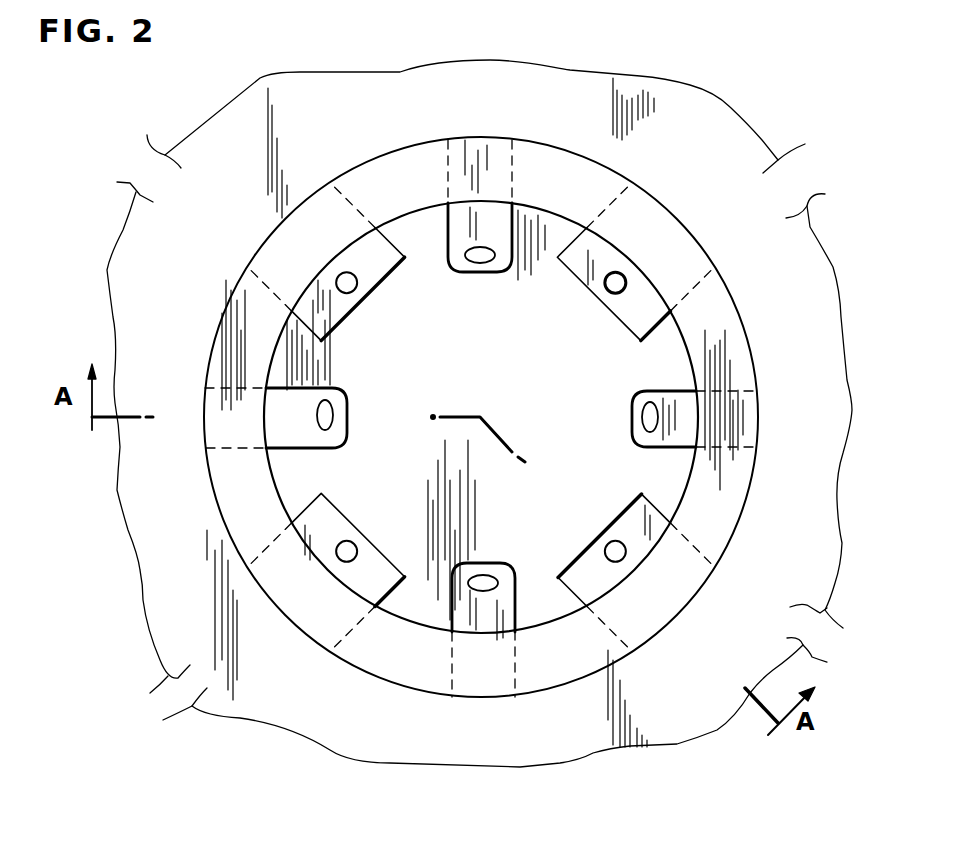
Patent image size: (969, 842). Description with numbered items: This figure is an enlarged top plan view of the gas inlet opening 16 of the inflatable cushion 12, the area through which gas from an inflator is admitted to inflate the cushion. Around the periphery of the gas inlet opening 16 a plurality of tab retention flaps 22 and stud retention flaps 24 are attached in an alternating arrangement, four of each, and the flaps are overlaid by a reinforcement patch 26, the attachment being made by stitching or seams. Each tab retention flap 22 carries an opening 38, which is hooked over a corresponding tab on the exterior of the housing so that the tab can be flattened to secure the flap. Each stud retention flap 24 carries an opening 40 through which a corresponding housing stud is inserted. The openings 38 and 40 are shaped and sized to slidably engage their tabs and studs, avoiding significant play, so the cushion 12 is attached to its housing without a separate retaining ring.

The cushion 12 is at (297, 82).
The gas inlet opening 16 is at (277, 340).
The tab retention flaps 22 is at (518, 218).
The stud retention flaps 24 is at (395, 245).
The reinforcement patch 26 is at (640, 215).
The opening 38 is at (340, 416).
The opening 40 is at (614, 290).